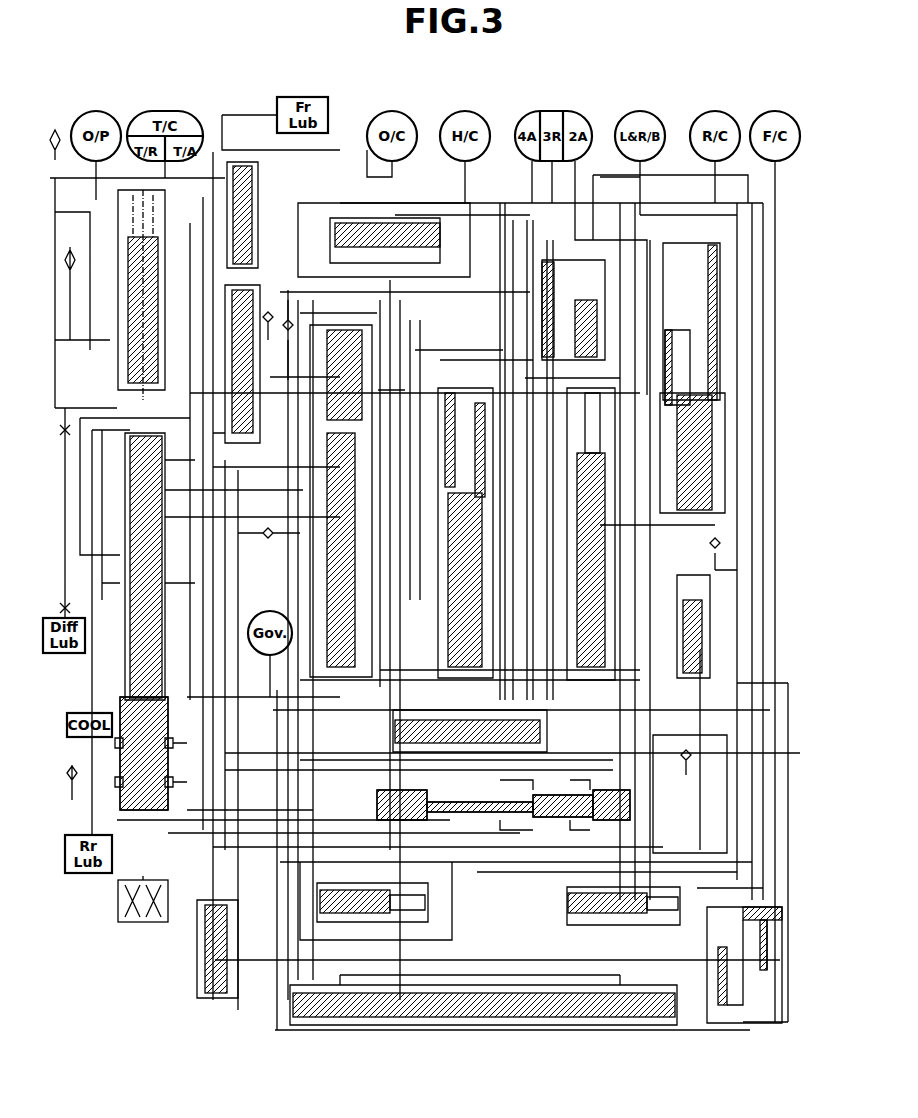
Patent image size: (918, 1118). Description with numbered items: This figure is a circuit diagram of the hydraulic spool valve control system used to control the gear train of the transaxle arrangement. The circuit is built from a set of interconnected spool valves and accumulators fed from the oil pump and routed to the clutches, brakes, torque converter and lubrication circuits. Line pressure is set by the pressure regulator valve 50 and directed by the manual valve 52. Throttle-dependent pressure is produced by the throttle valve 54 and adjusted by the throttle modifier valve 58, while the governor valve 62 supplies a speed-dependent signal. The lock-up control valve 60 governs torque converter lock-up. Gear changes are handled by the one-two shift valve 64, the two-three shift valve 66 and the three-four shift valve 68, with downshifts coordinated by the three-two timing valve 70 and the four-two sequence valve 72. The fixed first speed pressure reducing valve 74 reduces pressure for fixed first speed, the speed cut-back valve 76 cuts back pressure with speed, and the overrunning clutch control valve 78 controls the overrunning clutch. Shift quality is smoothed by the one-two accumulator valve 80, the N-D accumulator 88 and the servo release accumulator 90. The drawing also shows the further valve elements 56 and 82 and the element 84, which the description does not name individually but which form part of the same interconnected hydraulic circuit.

The pressure regulator valve 50 is at (158, 458).
The manual valve 52 is at (598, 825).
The throttle valve 54 is at (530, 1028).
The shift valve 56 is at (397, 890).
The throttle modifier valve 58 is at (222, 1003).
The lock-up control valve 60 is at (168, 330).
The governor valve 62 is at (259, 654).
The 1-2 shift valve 64 is at (567, 415).
The 2-3 shift valve 66 is at (462, 388).
The 3-4 shift valve 68 is at (350, 680).
The 3-2 timing valve 70 is at (340, 222).
The 4-2 sequence valve 72 is at (377, 742).
The fixed first speed pressure reducing valve 74 is at (680, 575).
The speed cut-back valve 76 is at (254, 190).
The overrunning clutch control valve 78 is at (232, 443).
The 1-2 accumulator valve 80 is at (700, 245).
The valve 82 is at (555, 910).
The solenoid 84 is at (143, 925).
The N-D accumulator 88 is at (708, 1000).
The servo release accumulator 90 is at (545, 260).